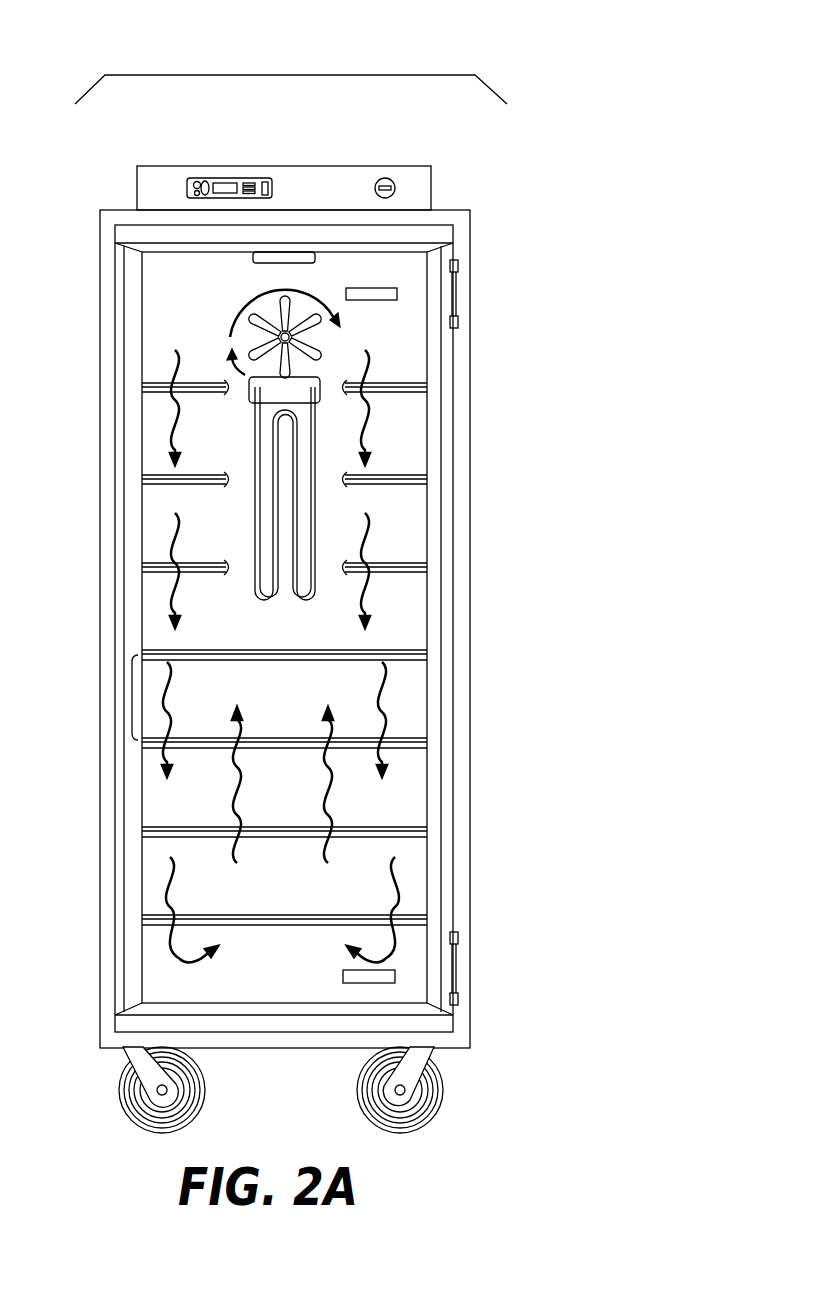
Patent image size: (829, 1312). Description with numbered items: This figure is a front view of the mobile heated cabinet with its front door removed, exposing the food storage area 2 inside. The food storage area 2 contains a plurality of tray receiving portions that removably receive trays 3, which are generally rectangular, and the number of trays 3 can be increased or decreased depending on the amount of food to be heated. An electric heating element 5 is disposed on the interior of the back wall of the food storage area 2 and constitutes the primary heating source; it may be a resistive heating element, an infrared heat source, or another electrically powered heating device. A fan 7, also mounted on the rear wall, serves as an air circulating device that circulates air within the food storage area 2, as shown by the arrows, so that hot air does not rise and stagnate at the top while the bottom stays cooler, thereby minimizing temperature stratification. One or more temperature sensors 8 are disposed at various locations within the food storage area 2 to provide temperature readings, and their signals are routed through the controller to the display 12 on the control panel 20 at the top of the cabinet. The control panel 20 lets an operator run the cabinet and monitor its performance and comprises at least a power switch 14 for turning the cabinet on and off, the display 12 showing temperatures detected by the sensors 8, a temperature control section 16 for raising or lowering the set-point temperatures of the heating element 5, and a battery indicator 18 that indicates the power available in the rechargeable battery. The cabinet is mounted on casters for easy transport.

The control panel 20 is at (297, 75).
The food storage area 2 is at (172, 290).
The tray 3 is at (130, 700).
The electric heating element 5 is at (255, 523).
The fan 7 is at (258, 333).
The temperature sensor 8 is at (385, 300).
The display 12 is at (225, 182).
The power switch 14 is at (189, 178).
The temperature control section 16 is at (205, 179).
The battery indicator 18 is at (398, 188).